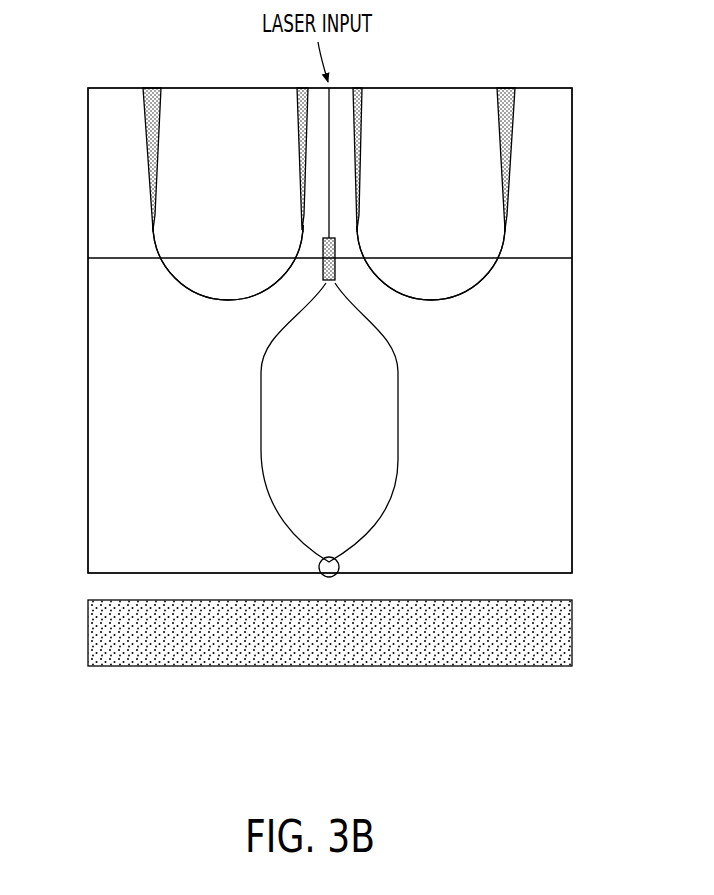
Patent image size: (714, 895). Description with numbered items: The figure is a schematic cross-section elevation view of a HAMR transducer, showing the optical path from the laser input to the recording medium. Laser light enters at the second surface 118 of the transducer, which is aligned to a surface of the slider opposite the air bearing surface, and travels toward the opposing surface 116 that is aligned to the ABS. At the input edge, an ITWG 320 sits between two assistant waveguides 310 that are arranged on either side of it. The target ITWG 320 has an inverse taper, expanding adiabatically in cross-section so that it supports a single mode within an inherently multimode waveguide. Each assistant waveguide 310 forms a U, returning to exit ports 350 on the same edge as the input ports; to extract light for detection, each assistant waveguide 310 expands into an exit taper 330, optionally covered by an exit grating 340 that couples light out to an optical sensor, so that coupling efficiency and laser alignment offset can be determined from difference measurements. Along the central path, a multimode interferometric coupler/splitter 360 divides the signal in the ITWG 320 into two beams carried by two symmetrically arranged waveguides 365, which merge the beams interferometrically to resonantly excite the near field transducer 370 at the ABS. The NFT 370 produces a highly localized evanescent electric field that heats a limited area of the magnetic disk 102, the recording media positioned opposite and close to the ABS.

The magnetic disk 102 is at (207, 668).
The surface aligned to the ABS 116 is at (125, 573).
The second surface of the HAMR transducer 118 is at (106, 91).
The assistant waveguide 310 is at (298, 133).
The ITWG (inverse taper waveguide) 320 is at (332, 107).
The exit taper 330 is at (157, 167).
The exit grating 340 is at (329, 262).
The exit port 350 is at (150, 88).
The multimode interferometric coupler/splitter 360 is at (312, 273).
The symmetrically arranged waveguides 365 is at (261, 446).
The near field transducer (NFT) 370 is at (318, 565).